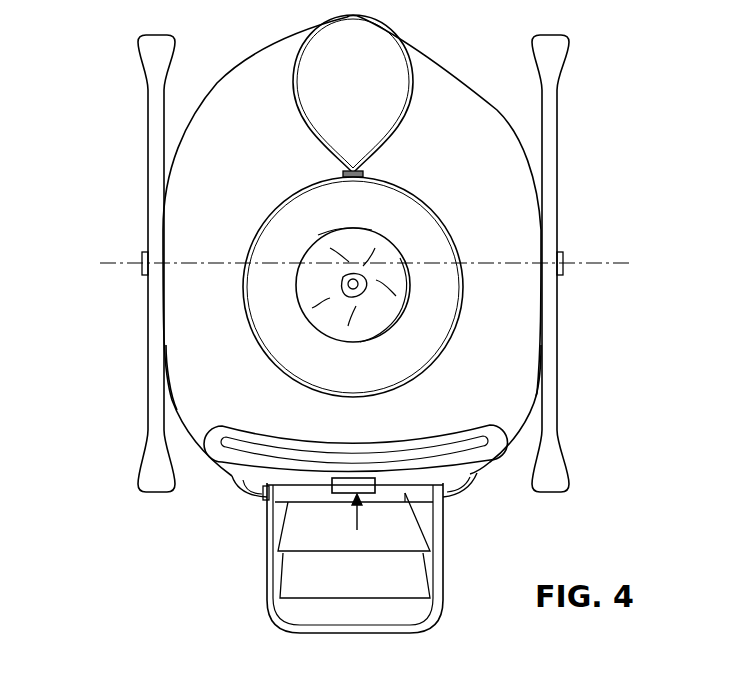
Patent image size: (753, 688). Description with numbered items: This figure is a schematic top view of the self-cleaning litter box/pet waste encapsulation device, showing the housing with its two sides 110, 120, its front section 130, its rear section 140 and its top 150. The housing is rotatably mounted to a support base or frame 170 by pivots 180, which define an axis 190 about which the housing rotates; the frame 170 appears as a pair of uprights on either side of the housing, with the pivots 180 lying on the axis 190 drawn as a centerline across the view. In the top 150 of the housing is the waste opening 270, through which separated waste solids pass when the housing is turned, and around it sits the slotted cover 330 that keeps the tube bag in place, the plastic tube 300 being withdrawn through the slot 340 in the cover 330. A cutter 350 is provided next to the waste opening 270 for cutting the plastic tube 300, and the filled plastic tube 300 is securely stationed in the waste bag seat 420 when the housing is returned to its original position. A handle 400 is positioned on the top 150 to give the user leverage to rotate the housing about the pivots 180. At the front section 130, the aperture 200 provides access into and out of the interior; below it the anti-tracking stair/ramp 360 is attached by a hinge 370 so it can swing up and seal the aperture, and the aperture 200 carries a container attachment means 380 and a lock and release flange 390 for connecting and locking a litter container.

The rear section 140 is at (437, 60).
The side 110 is at (177, 410).
The side 120 is at (530, 403).
The front section 130 is at (480, 470).
The top 150 is at (286, 421).
The waste bag seat 420 is at (372, 96).
The cutter 350 is at (370, 175).
The slotted cover 330 is at (425, 222).
The plastic tube 300 is at (313, 282).
The slot 340 is at (318, 235).
The waste opening 270 is at (407, 300).
The support base or frame 170 is at (148, 172).
The axis 190 is at (125, 263).
The pivots 180 is at (563, 258).
The handles 400 is at (416, 451).
The hinge 370 is at (263, 502).
The anti-tracking stair/ramp 360 is at (372, 589).
The container attachment means 380 is at (370, 494).
The lock and release flange 390 is at (367, 494).
The aperture 200 is at (357, 530).